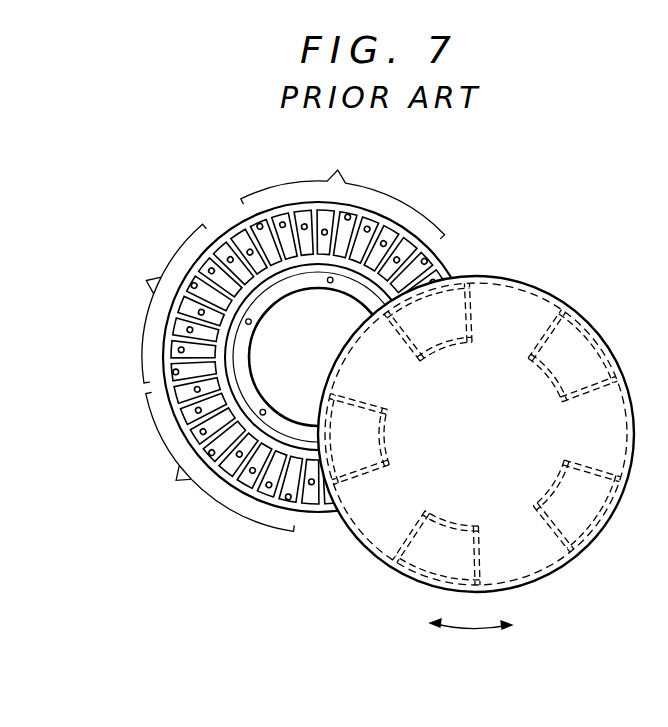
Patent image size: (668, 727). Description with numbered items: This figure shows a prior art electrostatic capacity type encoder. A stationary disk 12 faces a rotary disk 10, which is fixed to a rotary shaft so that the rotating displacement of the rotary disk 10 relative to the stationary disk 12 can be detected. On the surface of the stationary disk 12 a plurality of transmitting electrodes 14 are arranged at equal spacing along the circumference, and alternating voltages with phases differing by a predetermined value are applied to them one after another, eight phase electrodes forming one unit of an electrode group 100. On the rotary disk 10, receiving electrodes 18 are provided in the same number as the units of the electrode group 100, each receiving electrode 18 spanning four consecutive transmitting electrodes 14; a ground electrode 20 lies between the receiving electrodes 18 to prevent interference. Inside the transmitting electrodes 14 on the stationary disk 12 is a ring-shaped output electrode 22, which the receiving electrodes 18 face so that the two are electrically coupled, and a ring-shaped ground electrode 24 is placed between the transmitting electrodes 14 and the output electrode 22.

The rotary disk 10 is at (476, 435).
The stationary disk 12 is at (282, 334).
The transmitting electrode 14 is at (243, 237).
The receiving electrode 18 is at (582, 353).
The ground electrode 20 is at (513, 300).
The output electrode 22 is at (273, 297).
The ground electrode 24 is at (232, 367).
The electrode group 100 is at (273, 337).